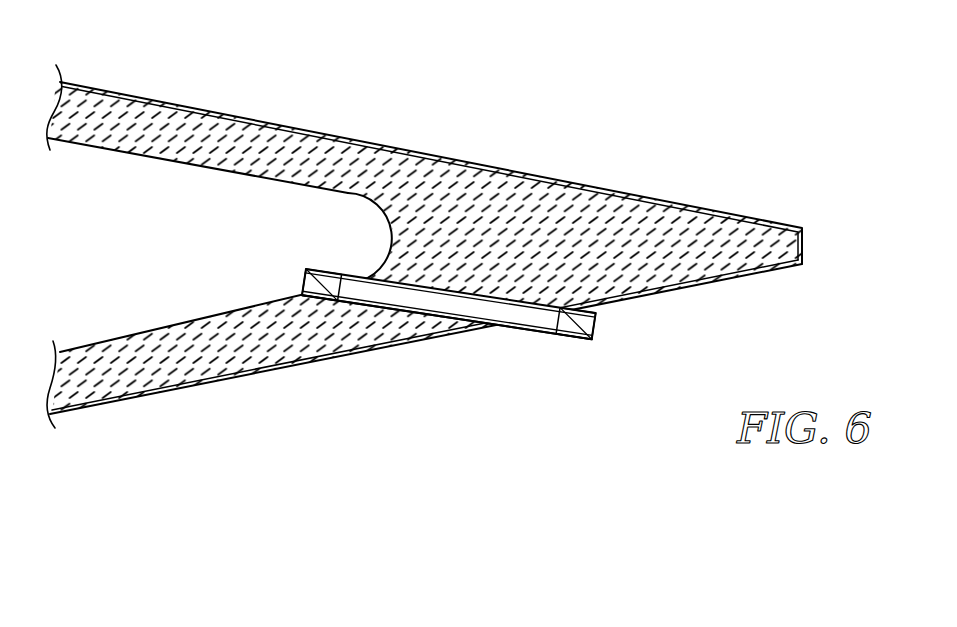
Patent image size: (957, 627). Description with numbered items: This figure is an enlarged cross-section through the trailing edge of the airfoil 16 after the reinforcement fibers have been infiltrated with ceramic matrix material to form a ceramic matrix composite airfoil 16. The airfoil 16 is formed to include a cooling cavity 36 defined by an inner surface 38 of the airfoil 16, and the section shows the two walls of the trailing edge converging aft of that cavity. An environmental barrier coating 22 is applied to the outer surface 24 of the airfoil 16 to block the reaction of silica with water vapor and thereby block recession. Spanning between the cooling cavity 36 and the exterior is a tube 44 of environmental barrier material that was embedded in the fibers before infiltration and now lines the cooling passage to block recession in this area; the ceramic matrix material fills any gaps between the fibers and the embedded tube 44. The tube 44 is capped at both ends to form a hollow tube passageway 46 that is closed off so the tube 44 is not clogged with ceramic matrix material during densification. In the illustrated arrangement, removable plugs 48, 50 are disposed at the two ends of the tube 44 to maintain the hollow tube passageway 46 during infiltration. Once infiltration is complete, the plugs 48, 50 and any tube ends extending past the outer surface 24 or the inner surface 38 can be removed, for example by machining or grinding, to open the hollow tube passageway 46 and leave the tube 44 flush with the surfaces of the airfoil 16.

The airfoil 16 is at (424, 232).
The environmental barrier coating 22 is at (424, 164).
The outer surface 24 is at (258, 369).
The cooling cavity 36 is at (192, 190).
The inner surface 38 is at (120, 153).
The tube 44 is at (558, 350).
The hollow tube passageway 46 is at (452, 324).
The removable plug 48 is at (306, 277).
The removable plug 50 is at (597, 327).